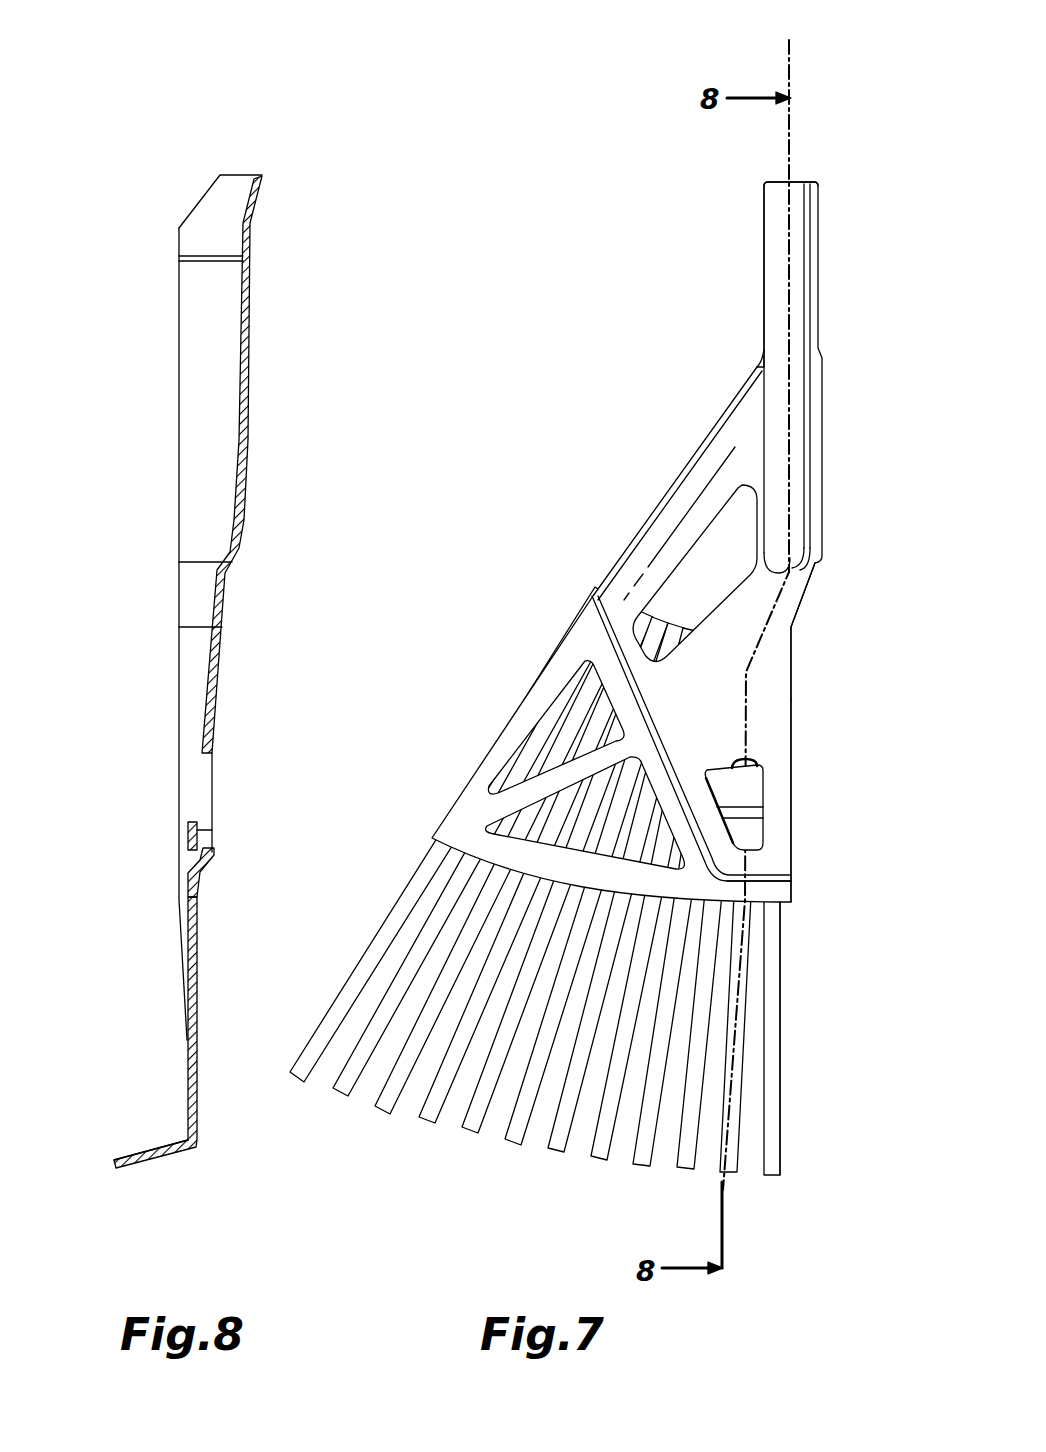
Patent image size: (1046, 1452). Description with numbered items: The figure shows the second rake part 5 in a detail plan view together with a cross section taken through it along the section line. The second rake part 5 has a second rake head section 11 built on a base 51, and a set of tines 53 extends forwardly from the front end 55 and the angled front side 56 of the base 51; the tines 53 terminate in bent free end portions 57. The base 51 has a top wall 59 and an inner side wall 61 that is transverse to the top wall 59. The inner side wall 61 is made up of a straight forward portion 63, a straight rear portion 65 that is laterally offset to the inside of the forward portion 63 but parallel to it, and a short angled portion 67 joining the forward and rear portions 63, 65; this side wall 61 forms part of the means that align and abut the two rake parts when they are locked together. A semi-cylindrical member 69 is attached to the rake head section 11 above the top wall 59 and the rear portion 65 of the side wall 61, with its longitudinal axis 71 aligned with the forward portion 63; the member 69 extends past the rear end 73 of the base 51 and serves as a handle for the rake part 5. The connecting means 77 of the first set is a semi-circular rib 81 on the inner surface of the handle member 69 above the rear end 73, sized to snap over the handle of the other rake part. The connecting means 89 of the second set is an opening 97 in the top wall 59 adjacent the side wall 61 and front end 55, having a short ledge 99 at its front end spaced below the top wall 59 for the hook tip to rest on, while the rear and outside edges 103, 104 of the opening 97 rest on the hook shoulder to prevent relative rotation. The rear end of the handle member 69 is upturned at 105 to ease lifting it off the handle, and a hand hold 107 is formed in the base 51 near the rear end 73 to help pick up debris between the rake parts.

In FIG. 7, the second rake part 5 is at (547, 436).
In FIG. 7, the second rake head section 11 is at (673, 450).
In FIG. 7, the base 51 is at (615, 541).
In FIG. 7, the tines 53 is at (780, 1013).
In FIG. 8, the tines 53 is at (198, 1007).
In FIG. 7, the front end 55 is at (770, 878).
In FIG. 8, the front end 55 is at (207, 877).
In FIG. 7, the angled front side 56 is at (640, 712).
In FIG. 7, the bent free end portions 57 is at (510, 1147).
In FIG. 8, the bent free end portions 57 is at (130, 1170).
In FIG. 7, the top wall 59 is at (726, 697).
In FIG. 8, the top wall 59 is at (222, 598).
In FIG. 7, the inner side wall 61 is at (800, 650).
In FIG. 8, the inner side wall 61 is at (172, 679).
In FIG. 7, the straight forward portion 63 is at (793, 688).
In FIG. 8, the straight forward portion 63 is at (211, 663).
In FIG. 7, the straight rear portion 65 is at (826, 442).
In FIG. 8, the straight rear portion 65 is at (228, 353).
In FIG. 7, the short angled portion 67 is at (805, 598).
In FIG. 8, the short angled portion 67 is at (211, 604).
In FIG. 7, the semi-cylindrical member 69 is at (770, 268).
In FIG. 8, the semi-cylindrical member 69 is at (250, 327).
In FIG. 7, the longitudinal axis 71 is at (764, 601).
In FIG. 7, the rear end 73 is at (755, 373).
In FIG. 8, the connecting means 77 is at (208, 253).
In FIG. 8, the semi-circular rib 81 is at (180, 262).
In FIG. 7, the connecting means 89 is at (774, 787).
In FIG. 8, the connecting means 89 is at (221, 808).
In FIG. 7, the opening 97 is at (718, 783).
In FIG. 8, the opening 97 is at (218, 784).
In FIG. 7, the short ledge 99 is at (758, 834).
In FIG. 8, the short ledge 99 is at (197, 830).
In FIG. 7, the rear edge 103 is at (747, 763).
In FIG. 8, the rear edge 103 is at (207, 760).
In FIG. 7, the outside edge 104 is at (718, 807).
In FIG. 7, the upturned rear end 105 is at (768, 183).
In FIG. 8, the upturned rear end 105 is at (263, 178).
In FIG. 7, the hand hold 107 is at (688, 512).